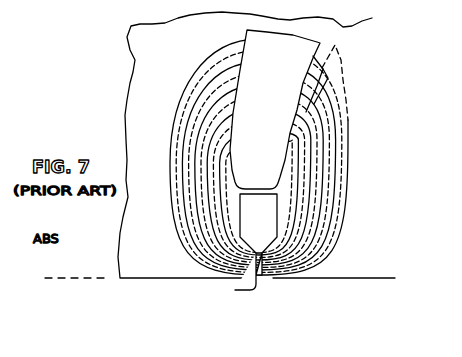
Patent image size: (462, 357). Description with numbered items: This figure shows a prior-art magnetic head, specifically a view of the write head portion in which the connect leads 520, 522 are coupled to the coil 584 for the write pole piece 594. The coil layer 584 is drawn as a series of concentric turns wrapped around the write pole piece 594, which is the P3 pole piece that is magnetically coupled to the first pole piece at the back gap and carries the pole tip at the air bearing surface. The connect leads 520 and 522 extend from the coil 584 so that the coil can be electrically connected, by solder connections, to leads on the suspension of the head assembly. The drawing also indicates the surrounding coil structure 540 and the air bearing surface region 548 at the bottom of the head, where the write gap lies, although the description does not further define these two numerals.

The connect lead 520 is at (278, 109).
The connect lead 522 is at (343, 78).
The coil 540 is at (358, 144).
The air bearing surface (ABS) 548 is at (82, 278).
The coil layer 584 is at (332, 207).
The write pole piece 594 is at (267, 229).